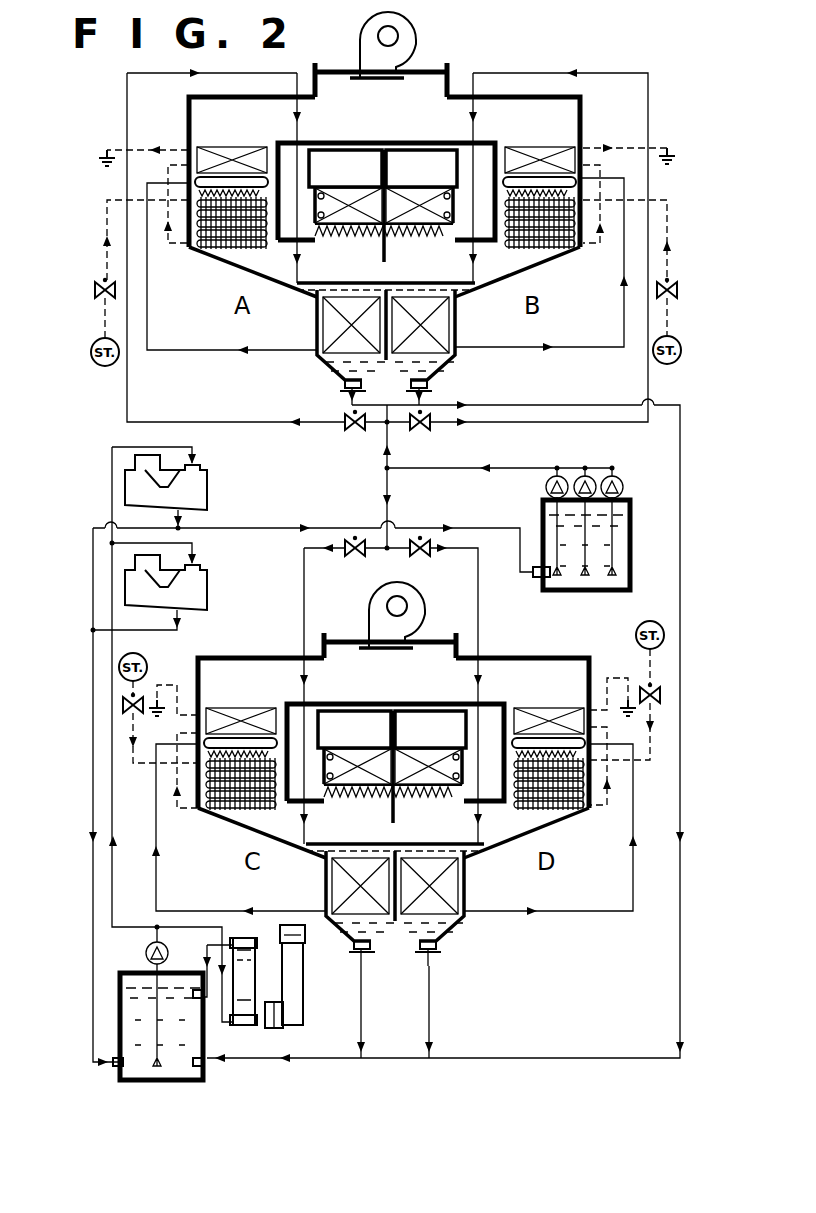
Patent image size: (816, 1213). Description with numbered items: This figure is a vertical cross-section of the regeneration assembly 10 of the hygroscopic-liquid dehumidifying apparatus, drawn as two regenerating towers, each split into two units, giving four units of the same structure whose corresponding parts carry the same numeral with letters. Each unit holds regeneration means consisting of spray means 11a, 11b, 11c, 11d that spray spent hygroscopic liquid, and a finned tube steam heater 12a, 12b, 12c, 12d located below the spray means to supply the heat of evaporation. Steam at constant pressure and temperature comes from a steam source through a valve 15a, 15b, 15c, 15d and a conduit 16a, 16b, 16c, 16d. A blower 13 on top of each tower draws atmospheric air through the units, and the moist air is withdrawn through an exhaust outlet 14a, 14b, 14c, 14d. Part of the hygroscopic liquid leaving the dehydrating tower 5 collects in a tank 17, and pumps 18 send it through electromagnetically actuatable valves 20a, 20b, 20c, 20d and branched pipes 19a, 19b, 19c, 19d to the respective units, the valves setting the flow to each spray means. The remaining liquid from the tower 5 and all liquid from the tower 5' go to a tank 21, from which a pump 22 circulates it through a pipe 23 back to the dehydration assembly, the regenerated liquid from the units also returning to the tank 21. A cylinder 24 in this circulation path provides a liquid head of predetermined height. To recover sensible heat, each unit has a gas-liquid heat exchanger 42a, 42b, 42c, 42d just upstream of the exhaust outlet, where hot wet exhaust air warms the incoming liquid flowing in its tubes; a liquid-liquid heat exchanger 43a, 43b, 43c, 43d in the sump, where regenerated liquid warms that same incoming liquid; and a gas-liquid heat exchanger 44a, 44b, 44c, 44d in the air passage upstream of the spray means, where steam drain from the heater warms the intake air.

The regeneration assembly 10 is at (472, 64).
The blower 13 is at (412, 38).
The exhaust outlet 14a is at (340, 160).
The exhaust outlet 14b is at (414, 160).
The exhaust outlet 14c is at (349, 721).
The exhaust outlet 14d is at (424, 721).
The gas-liquid heat exchanger 44a is at (228, 152).
The gas-liquid heat exchanger 44b is at (528, 155).
The gas-liquid heat exchanger 44c is at (237, 713).
The gas-liquid heat exchanger 44d is at (535, 717).
The spray means 11a is at (238, 180).
The spray means 11b is at (535, 182).
The spray means 11c is at (247, 742).
The spray means 11d is at (544, 744).
The heat exchanger 12a is at (218, 250).
The heat exchanger 12b is at (546, 252).
The heat exchanger 12c is at (226, 812).
The heat exchanger 12d is at (556, 812).
The gas-liquid heat exchanger 42a is at (347, 228).
The gas-liquid heat exchanger 42b is at (421, 228).
The gas-liquid heat exchanger 42c is at (356, 790).
The gas-liquid heat exchanger 42d is at (430, 790).
The liquid-liquid heat exchanger 43a is at (325, 328).
The liquid-liquid heat exchanger 43b is at (445, 326).
The liquid-liquid heat exchanger 43c is at (334, 888).
The liquid-liquid heat exchanger 43d is at (455, 888).
The valve 15a is at (98, 296).
The valve 15b is at (678, 294).
The valve 15c is at (120, 706).
The valve 15d is at (662, 698).
The conduit 16a is at (106, 236).
The conduit 16b is at (670, 236).
The conduit 16c is at (132, 766).
The conduit 16d is at (654, 750).
The branched pipe 19a is at (238, 425).
The branched pipe 19b is at (542, 424).
The branched pipe 19c is at (303, 566).
The branched pipe 19d is at (480, 592).
The valve 20a is at (350, 432).
The valve 20b is at (420, 432).
The valve 20c is at (355, 538).
The valve 20d is at (420, 538).
The dehydrating tower 5 is at (173, 489).
The dehydrating tower 5' is at (164, 587).
The tank 17 is at (630, 546).
The pumps 18 is at (620, 480).
The tank 21 is at (190, 1080).
The pump 22 is at (146, 953).
The pipe 23 is at (136, 872).
The cylinder 24 is at (256, 986).